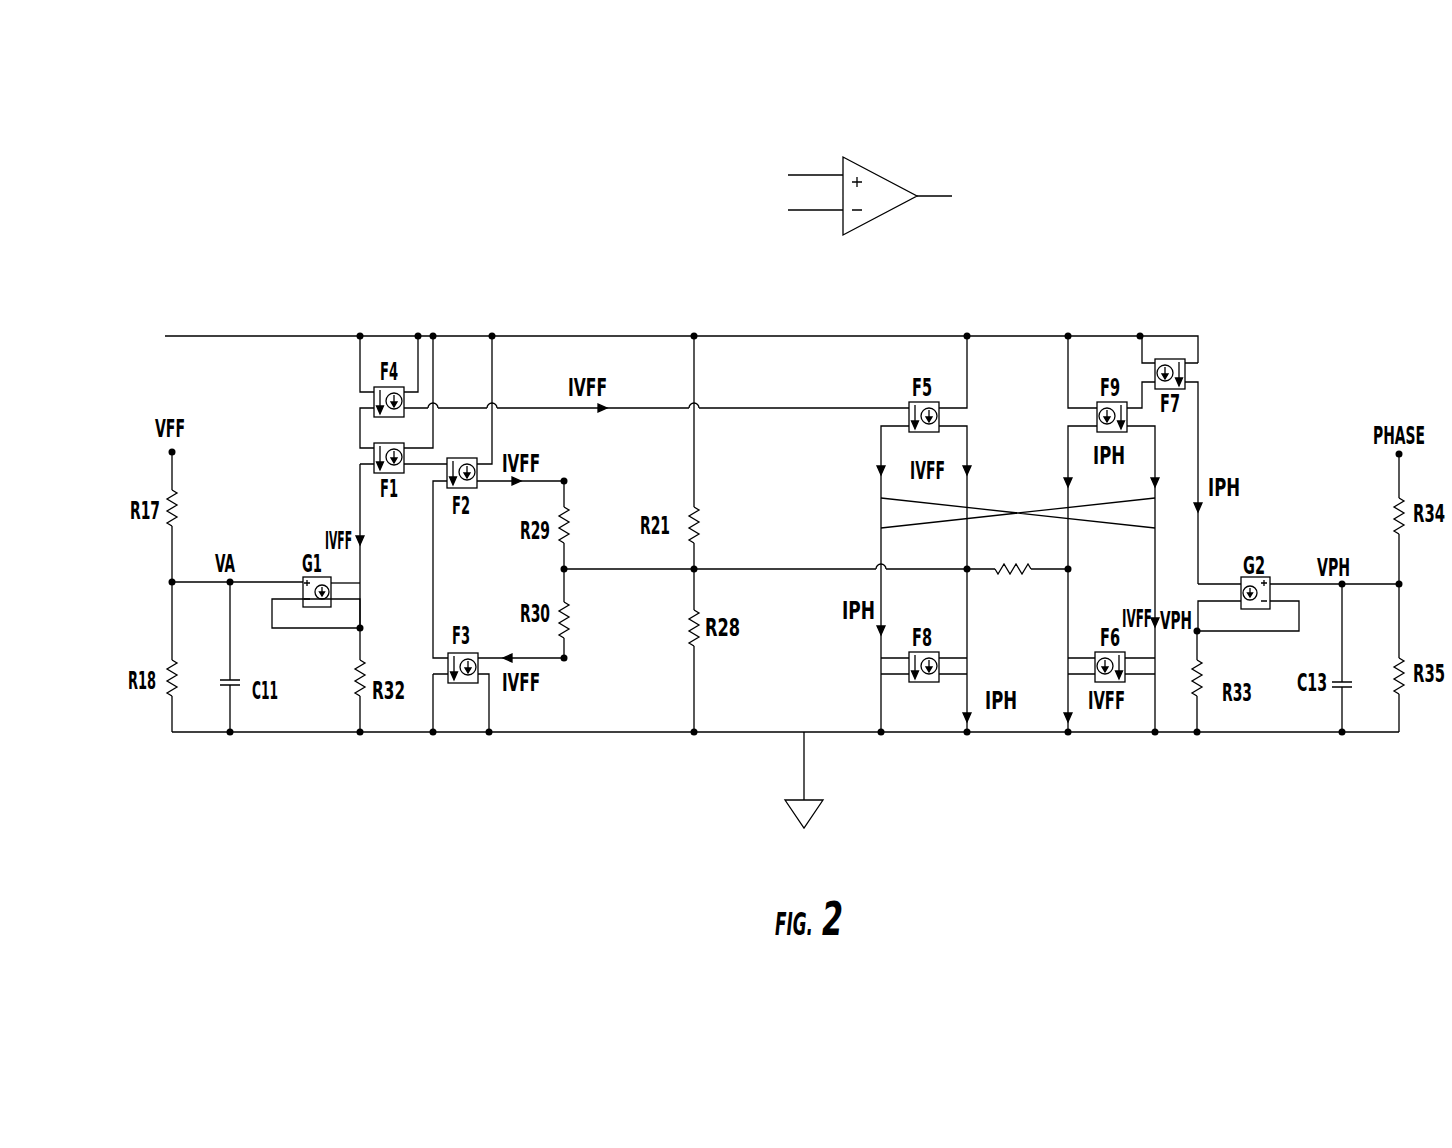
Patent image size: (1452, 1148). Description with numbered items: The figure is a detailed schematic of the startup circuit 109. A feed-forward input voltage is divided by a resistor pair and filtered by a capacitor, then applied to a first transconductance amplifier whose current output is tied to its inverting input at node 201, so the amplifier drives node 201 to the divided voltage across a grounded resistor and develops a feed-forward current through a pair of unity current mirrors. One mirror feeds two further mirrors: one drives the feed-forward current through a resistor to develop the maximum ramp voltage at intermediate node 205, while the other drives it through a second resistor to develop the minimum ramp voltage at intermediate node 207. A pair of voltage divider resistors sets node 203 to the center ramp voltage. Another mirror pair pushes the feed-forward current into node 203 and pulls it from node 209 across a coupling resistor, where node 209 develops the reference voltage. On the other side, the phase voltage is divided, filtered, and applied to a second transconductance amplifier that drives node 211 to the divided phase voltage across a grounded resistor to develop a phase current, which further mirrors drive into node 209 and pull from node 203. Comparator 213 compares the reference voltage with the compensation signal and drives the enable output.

The startup circuit 109 is at (408, 235).
The node 201 is at (360, 628).
The node 203 is at (694, 569).
The intermediate node 205 is at (564, 481).
The intermediate node 207 is at (564, 658).
The node 209 is at (1068, 569).
The node 211 is at (1197, 631).
The comparator 213 is at (880, 170).